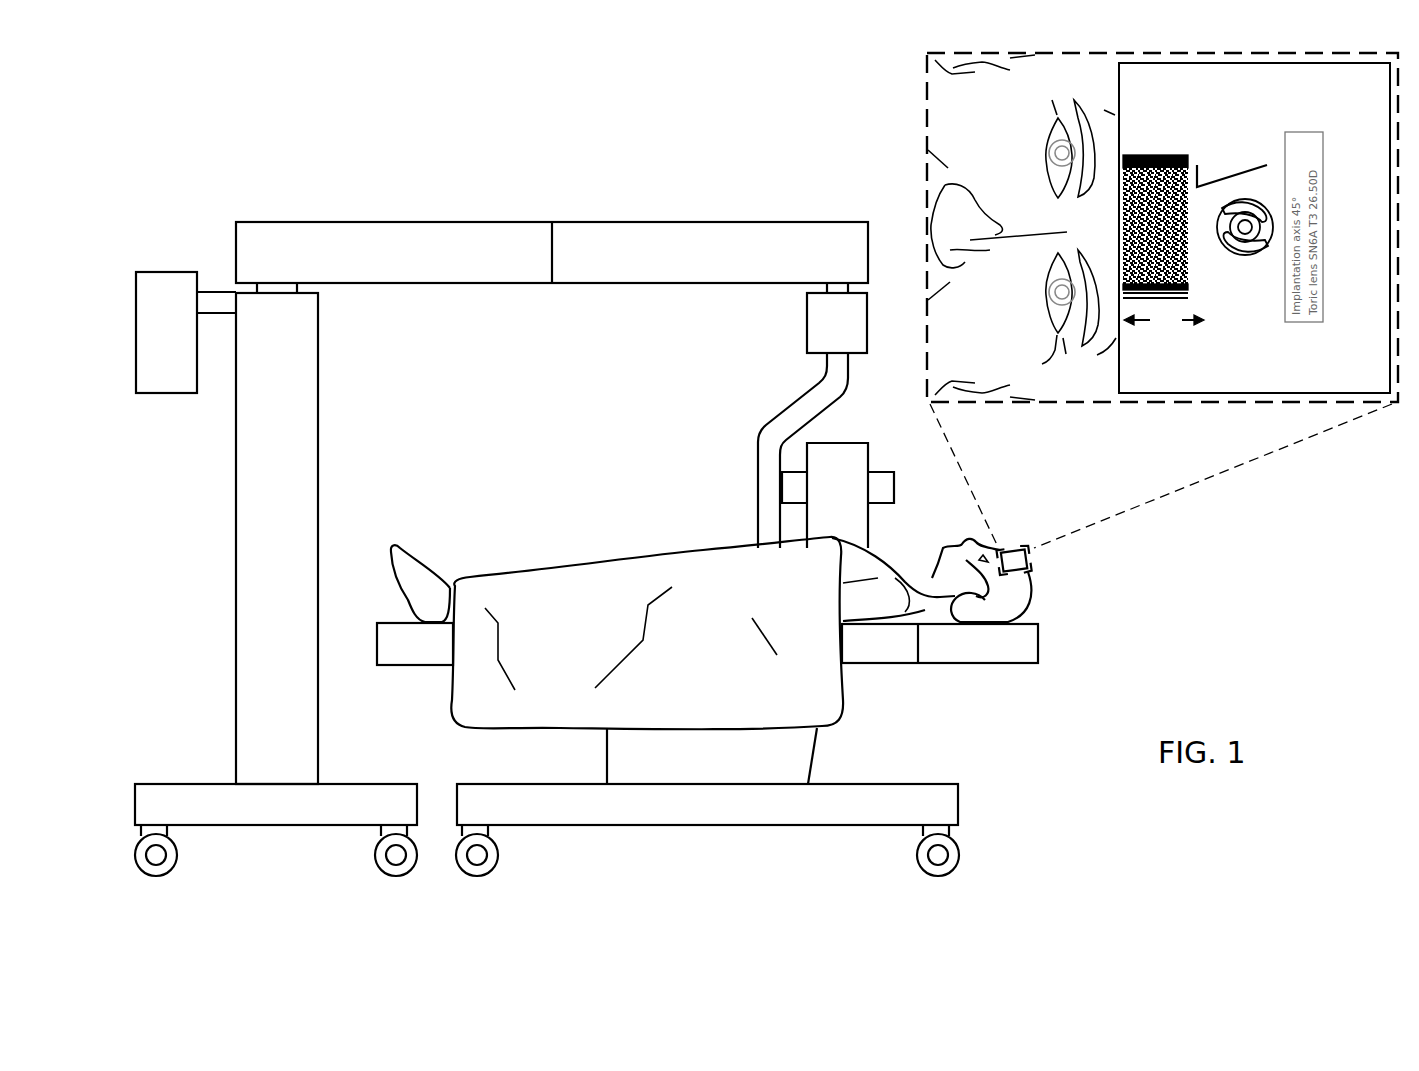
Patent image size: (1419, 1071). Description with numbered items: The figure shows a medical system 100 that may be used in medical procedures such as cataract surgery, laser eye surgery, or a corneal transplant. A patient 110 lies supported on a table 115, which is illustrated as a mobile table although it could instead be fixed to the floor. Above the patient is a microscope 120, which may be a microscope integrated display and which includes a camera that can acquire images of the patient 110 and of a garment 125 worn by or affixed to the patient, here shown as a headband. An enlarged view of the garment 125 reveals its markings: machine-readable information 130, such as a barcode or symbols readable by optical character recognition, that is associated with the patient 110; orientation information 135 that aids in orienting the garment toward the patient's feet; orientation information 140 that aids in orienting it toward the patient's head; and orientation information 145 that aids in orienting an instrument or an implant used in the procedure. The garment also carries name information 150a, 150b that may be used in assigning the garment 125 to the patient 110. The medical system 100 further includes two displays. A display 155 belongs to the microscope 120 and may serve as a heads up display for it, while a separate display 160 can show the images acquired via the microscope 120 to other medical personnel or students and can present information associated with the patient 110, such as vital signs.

The medical system 100 is at (326, 143).
The patient 110 is at (612, 552).
The table 115 is at (1038, 644).
The microscope 120 is at (857, 503).
The garment 125 is at (1017, 546).
The machine-readable information 130 is at (1160, 153).
The orientation information 135 is at (1152, 337).
The orientation information 140 is at (1178, 338).
The orientation information 145 is at (1245, 258).
The name information 150a is at (1340, 180).
The name information 150b is at (1370, 285).
The display 155 is at (857, 334).
The display 160 is at (186, 343).